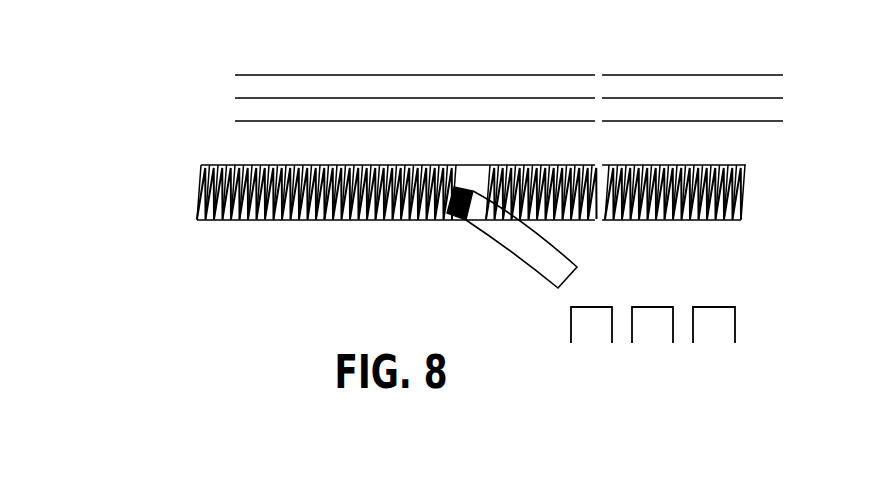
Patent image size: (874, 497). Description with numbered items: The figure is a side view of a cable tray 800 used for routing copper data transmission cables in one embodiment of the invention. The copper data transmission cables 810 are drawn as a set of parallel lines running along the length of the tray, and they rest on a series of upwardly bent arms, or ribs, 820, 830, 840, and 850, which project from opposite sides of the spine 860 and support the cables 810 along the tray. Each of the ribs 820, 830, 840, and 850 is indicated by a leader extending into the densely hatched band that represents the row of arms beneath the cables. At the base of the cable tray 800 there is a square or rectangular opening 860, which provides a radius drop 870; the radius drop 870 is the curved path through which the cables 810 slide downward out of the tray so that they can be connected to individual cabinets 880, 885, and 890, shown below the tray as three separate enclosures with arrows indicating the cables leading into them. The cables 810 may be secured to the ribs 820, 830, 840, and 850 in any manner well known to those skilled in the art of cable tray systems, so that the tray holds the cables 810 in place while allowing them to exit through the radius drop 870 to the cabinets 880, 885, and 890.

The cable tray 800 is at (180, 107).
The copper data transmission cables 810 is at (797, 80).
The upwardly bent arm 820 is at (228, 190).
The upwardly bent arm 830 is at (397, 187).
The upwardly bent arm 840 is at (557, 190).
The upwardly bent arm 850 is at (693, 187).
The opening 860 is at (455, 219).
The radius drop 870 is at (555, 241).
The cabinet 880 is at (603, 348).
The cabinet 885 is at (662, 348).
The cabinet 890 is at (727, 348).